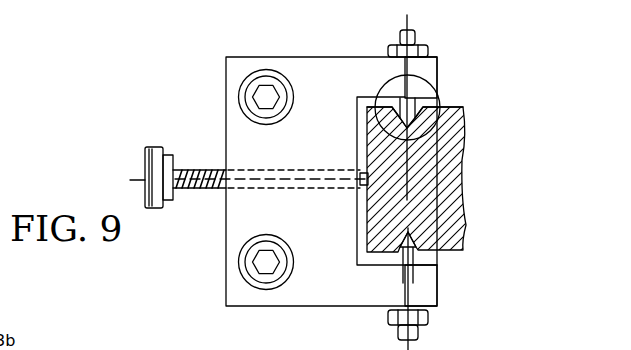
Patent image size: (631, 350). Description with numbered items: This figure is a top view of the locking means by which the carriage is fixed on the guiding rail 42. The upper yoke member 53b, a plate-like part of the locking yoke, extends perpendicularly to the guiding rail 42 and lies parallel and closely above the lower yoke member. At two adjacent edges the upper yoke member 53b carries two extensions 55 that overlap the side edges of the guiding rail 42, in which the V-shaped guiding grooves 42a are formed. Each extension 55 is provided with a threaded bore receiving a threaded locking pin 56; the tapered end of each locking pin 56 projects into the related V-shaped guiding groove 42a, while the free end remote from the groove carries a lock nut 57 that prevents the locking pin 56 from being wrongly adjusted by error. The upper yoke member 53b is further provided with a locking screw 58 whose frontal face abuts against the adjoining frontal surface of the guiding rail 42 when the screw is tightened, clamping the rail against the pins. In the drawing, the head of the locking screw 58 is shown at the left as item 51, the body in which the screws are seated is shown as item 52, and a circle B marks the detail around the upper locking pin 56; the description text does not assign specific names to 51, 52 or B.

The guiding rail 42 is at (440, 182).
The V-shaped guiding groove 42a is at (430, 140).
The screw head 51 is at (143, 162).
The clamp body 52 is at (222, 264).
The upper yoke member 53b is at (240, 142).
The extension 55 is at (433, 65).
The threaded locking pin 56 is at (459, 118).
The lock nut 57 is at (393, 55).
The locking screw 58 is at (203, 189).
The detail circle B is at (437, 100).